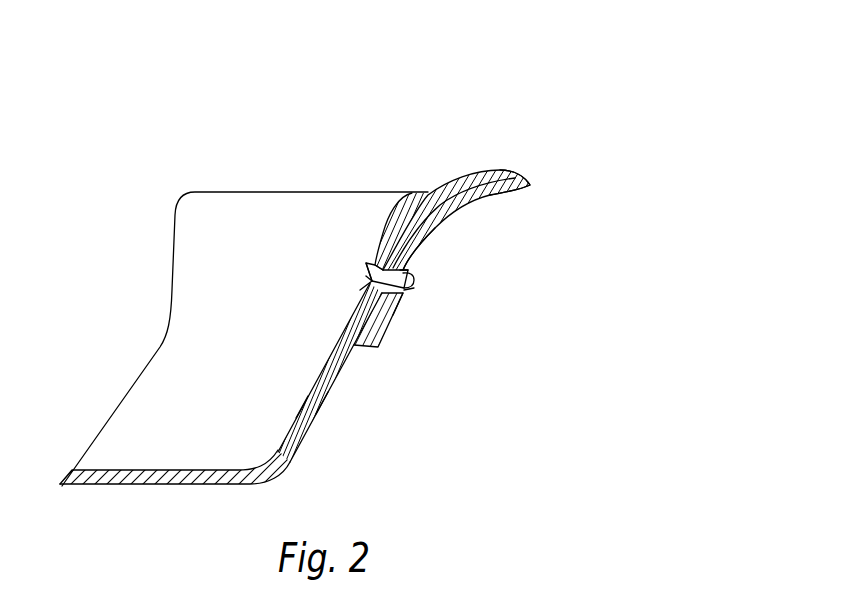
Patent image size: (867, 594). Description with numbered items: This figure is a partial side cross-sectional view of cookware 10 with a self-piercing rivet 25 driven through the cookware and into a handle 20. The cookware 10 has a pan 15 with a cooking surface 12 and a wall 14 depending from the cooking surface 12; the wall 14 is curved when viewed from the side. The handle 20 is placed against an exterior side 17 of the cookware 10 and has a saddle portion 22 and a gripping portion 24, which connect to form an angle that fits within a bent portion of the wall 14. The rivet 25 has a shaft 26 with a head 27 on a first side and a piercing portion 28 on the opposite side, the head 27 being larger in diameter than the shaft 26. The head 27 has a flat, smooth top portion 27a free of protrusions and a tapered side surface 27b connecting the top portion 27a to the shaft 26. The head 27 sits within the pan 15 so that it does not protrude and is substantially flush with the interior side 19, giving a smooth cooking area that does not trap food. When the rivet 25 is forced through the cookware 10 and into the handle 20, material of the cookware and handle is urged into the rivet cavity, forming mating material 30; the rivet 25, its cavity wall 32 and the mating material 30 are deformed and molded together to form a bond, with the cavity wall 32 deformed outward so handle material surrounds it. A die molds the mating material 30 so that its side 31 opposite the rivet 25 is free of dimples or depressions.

The cookware 10 is at (379, 110).
The cooking surface 12 is at (162, 470).
The wall 14 is at (294, 446).
The pan 15 is at (379, 221).
The exterior side 17 is at (323, 402).
The interior side 19 is at (302, 407).
The handle 20 is at (460, 175).
The saddle portion 22 is at (388, 336).
The gripping portion 24 is at (503, 192).
The self-piercing rivet 25 is at (348, 259).
The shaft 26 is at (431, 247).
The head 27 is at (367, 262).
The top portion 27a is at (358, 277).
The side surface 27b is at (364, 276).
The piercing portion 28 is at (397, 311).
The mating material 30 is at (414, 285).
The side of mating material 31 is at (413, 291).
The cavity wall 32 is at (413, 264).